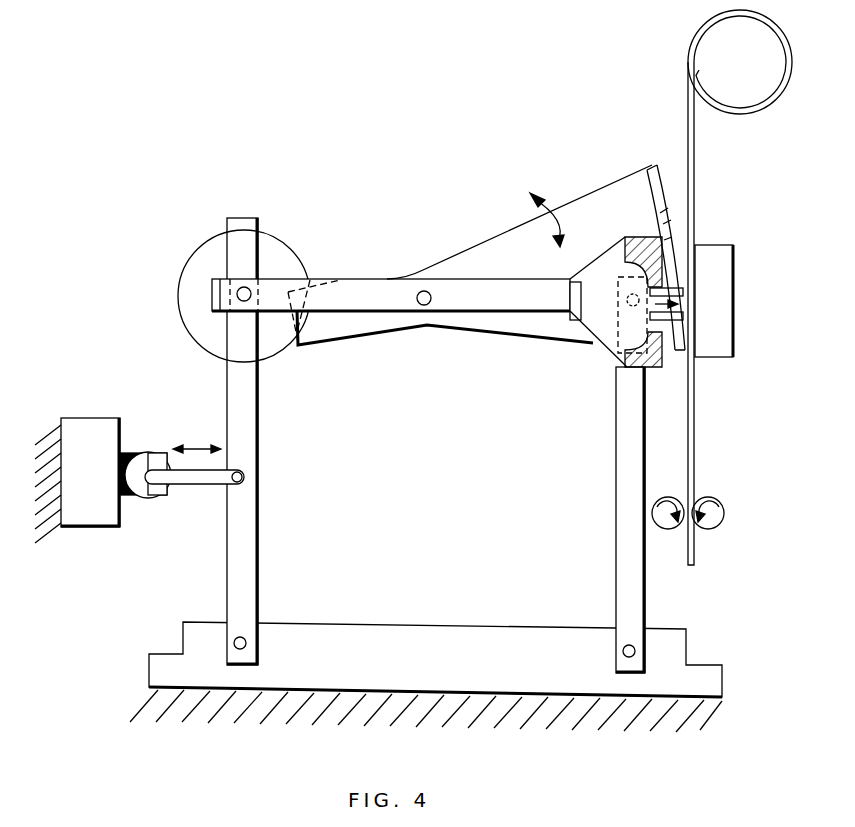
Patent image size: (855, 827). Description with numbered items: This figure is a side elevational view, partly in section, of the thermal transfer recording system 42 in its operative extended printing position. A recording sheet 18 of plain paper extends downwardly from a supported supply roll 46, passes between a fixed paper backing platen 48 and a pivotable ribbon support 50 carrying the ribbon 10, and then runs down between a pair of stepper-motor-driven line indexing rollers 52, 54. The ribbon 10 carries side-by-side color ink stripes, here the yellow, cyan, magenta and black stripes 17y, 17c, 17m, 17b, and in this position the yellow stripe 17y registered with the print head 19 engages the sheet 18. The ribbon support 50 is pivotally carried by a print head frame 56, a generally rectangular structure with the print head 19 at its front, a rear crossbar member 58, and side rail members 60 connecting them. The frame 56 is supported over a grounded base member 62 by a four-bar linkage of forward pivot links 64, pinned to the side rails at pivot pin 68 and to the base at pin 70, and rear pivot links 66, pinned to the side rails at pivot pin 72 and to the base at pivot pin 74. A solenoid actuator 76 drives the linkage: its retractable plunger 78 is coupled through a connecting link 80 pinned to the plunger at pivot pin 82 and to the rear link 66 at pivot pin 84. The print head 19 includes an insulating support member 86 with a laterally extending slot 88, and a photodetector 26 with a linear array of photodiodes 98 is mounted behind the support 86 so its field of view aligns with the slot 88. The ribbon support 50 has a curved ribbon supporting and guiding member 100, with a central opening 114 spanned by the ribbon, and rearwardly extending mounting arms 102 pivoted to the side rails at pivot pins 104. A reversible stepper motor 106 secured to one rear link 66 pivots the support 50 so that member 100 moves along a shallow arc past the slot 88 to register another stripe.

The thermal transfer recording system 42 is at (380, 172).
The base member 62 is at (490, 624).
The rear pivot links 66 is at (259, 519).
The pivot pin 74 is at (246, 643).
The forward pivot links 64 is at (618, 457).
The pivot pin 70 is at (623, 653).
The reversible stepper motor 106 is at (212, 250).
The crossbar member 58 is at (212, 290).
The pivot pin 72 is at (244, 287).
The pivot pins 104 is at (424, 305).
The side rail members 60 is at (346, 280).
The print head carriage or frame 56 is at (324, 272).
The mounting arms 102 is at (498, 250).
The ribbon support 50 is at (612, 185).
The photodiodes 98 is at (602, 290).
The photodetector 26 is at (574, 281).
The support member 86 is at (628, 248).
The slot or opening 88 is at (668, 330).
The pivot pin 68 is at (626, 305).
The cyan ink stripe 17c is at (683, 284).
The yellow ink stripe 17y is at (684, 305).
The ribbon 10 is at (680, 208).
The ribbon supporting and guiding member 100 is at (652, 170).
The central opening 114 is at (660, 232).
The print head 19 is at (634, 229).
The black ink stripe 17b is at (673, 233).
The magenta ink stripe 17m is at (700, 246).
The platen 48 is at (735, 270).
The recording sheet 18 is at (694, 160).
The supply roll 46 is at (791, 90).
The paper advancing roller 52 is at (666, 498).
The paper advancing roller 54 is at (714, 498).
The solenoid actuator 76 is at (93, 418).
The retractable plunger 78 is at (143, 456).
The pivot pin 82 is at (152, 482).
The connecting link 80 is at (198, 484).
The pivot pin 84 is at (243, 477).